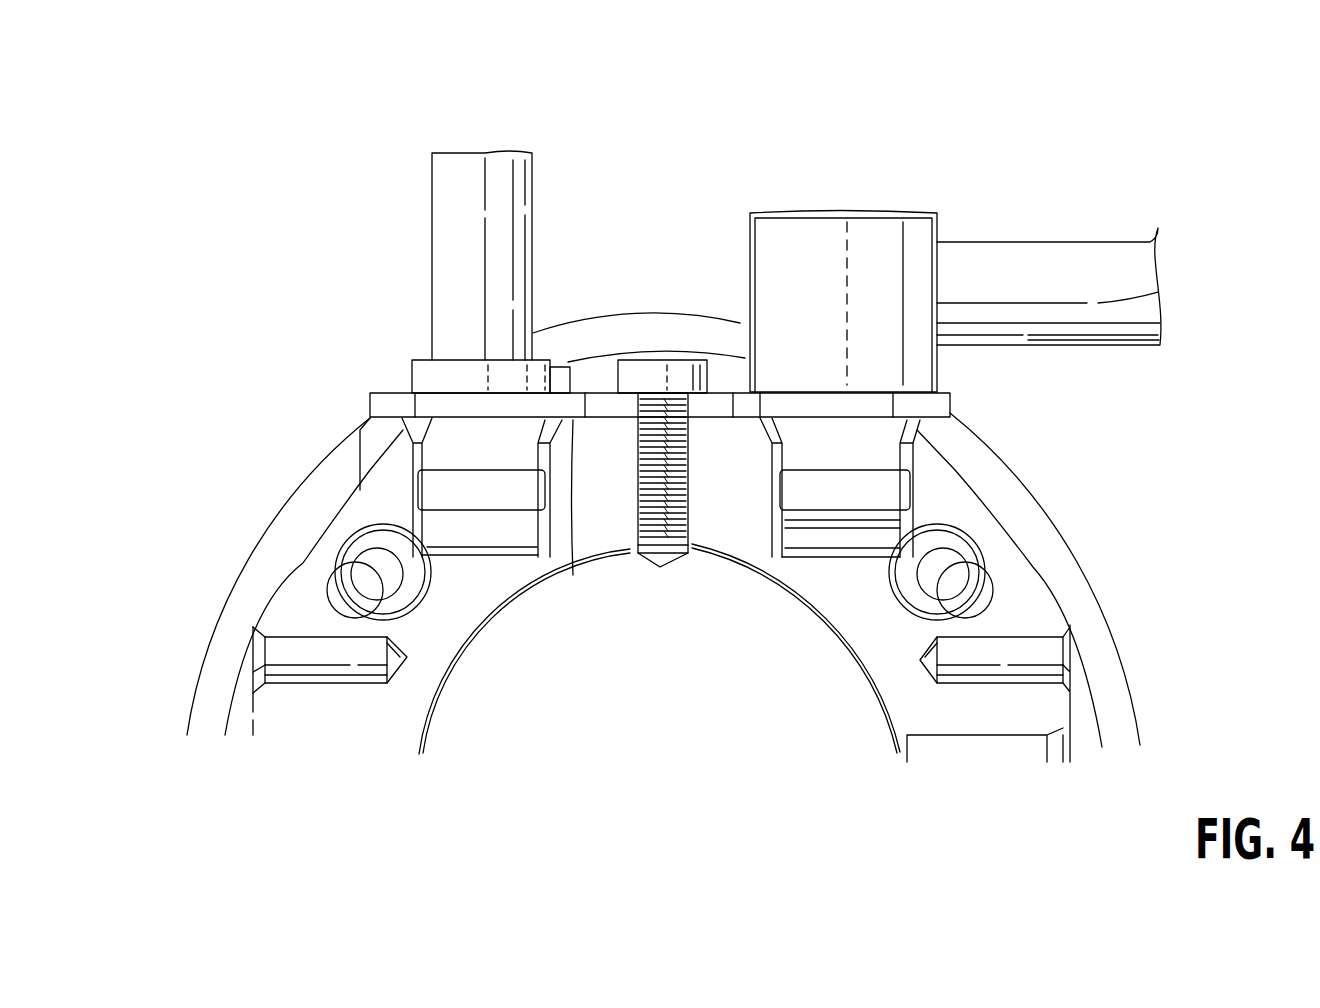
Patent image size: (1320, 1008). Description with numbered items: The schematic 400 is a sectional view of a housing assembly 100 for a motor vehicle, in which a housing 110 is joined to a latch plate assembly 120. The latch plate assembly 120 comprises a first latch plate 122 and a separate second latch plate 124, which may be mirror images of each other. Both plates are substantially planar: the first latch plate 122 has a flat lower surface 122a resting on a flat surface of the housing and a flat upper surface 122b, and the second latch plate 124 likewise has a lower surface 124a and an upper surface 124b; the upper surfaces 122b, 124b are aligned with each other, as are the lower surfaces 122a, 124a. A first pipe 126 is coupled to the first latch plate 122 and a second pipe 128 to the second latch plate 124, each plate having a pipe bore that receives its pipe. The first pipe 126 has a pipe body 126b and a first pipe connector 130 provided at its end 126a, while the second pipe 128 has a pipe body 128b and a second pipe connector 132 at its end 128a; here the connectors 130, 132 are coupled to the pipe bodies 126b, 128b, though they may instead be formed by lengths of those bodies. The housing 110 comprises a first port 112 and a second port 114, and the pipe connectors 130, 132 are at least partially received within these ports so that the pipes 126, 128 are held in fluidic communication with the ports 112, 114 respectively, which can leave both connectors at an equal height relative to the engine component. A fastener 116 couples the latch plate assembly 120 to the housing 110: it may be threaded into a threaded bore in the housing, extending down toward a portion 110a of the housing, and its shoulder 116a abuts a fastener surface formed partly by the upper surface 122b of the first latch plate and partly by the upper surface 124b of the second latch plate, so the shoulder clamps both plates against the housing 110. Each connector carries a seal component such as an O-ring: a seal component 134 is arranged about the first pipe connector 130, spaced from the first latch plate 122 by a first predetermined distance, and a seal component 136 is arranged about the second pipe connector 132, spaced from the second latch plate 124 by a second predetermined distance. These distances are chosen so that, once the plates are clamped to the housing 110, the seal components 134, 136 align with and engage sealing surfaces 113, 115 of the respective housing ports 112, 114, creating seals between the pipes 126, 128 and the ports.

The mounting assembly 100 is at (245, 265).
The housing 110 is at (1088, 568).
The inner surface of tubular body 110a is at (620, 567).
The first port 112 is at (775, 500).
The sealing surface 113 is at (772, 493).
The second port 114 is at (548, 557).
The sealing surface 115 is at (410, 486).
The fastener 116 is at (678, 373).
The shoulder 116a is at (630, 397).
The latch plate assembly 120 is at (392, 320).
The first latch plate 122 is at (925, 403).
The lower surface 122a is at (760, 418).
The upper surface 122b is at (737, 390).
The second latch plate 124 is at (388, 405).
The lower surface 124a is at (582, 420).
The upper surface 124b is at (567, 360).
The first pipe 126 is at (970, 267).
The end of first pipe 126a is at (877, 533).
The pipe body 126b is at (1063, 280).
The second pipe 128 is at (477, 167).
The end of second pipe 128a is at (447, 540).
The pipe body 128b is at (458, 247).
The first pipe connector 130 is at (867, 443).
The second pipe connector 132 is at (452, 450).
The seal component 134 is at (852, 513).
The seal component 136 is at (478, 522).
The schematic 400 is at (1212, 84).